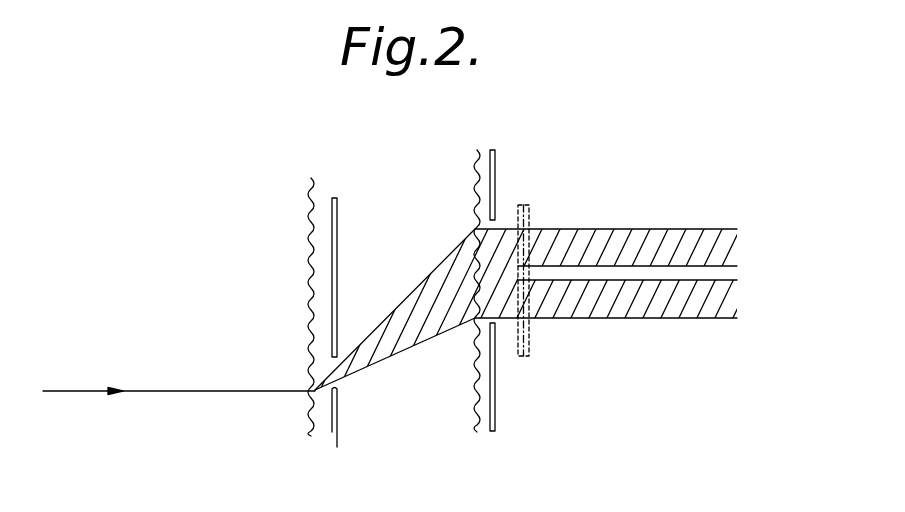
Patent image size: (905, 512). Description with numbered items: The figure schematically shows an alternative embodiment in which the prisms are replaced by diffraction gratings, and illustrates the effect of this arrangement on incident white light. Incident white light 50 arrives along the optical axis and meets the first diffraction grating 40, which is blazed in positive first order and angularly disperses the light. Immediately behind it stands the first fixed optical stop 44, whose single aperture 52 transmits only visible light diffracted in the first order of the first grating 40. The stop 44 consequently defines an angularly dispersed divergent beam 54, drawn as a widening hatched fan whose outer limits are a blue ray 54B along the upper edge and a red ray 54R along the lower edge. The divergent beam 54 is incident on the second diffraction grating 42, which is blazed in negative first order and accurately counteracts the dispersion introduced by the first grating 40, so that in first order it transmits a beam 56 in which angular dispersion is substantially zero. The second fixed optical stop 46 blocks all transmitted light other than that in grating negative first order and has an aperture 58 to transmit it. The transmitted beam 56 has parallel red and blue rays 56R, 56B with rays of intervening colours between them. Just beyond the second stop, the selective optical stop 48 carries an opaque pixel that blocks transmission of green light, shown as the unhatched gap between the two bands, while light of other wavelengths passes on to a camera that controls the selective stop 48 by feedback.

The first diffraction grating 40 is at (311, 436).
The second diffraction grating 42 is at (477, 432).
The first fixed optical stop 44 is at (337, 447).
The second fixed optical stop 46 is at (496, 430).
The selective optical stop 48 is at (528, 345).
The input light beam 50 is at (76, 391).
The aperture 52 is at (338, 392).
The divergent beam 54 is at (539, 294).
The blue ray 54B is at (455, 248).
The red ray 54R is at (440, 338).
The transmitted beam 56 is at (539, 287).
The blue ray 56B is at (730, 228).
The red ray 56R is at (705, 320).
The aperture 58 is at (497, 222).